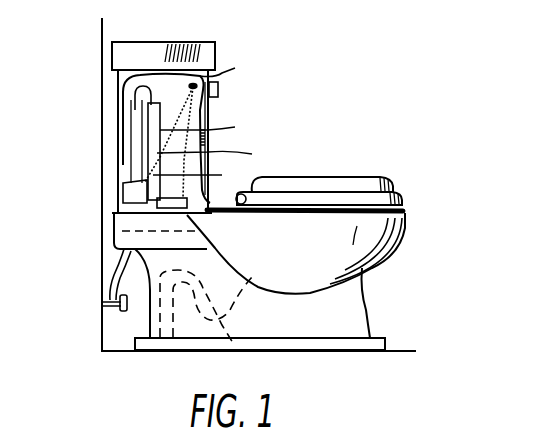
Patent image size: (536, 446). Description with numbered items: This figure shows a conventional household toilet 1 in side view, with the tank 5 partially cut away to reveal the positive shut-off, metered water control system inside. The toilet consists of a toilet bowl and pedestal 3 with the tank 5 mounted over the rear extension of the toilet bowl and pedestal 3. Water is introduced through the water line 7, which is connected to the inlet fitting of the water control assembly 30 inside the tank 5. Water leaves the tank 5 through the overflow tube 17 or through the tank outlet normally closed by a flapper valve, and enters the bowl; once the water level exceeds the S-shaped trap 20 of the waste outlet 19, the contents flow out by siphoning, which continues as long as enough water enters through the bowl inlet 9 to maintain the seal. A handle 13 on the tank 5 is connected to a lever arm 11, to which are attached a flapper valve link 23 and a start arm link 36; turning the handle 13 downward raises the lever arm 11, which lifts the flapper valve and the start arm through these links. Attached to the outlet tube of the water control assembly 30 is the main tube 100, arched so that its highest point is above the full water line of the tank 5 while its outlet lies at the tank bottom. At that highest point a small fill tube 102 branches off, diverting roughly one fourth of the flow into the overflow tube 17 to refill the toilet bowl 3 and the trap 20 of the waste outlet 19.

The toilet 1 is at (283, 125).
The toilet bowl and pedestal 3 is at (403, 227).
The tank 5 is at (122, 108).
The water line 7 is at (110, 277).
The bowl inlet 9 is at (112, 220).
The lever arm 11 is at (227, 61).
The handle 13 is at (218, 90).
The overflow tube 17 is at (197, 174).
The waste outlet 19 is at (170, 340).
The trap 20 is at (230, 340).
The flapper valve link 23 is at (217, 155).
The water control assembly 30 is at (127, 192).
The start arm link 36 is at (211, 129).
The main tube 100 is at (120, 105).
The fill tube 102 is at (144, 86).